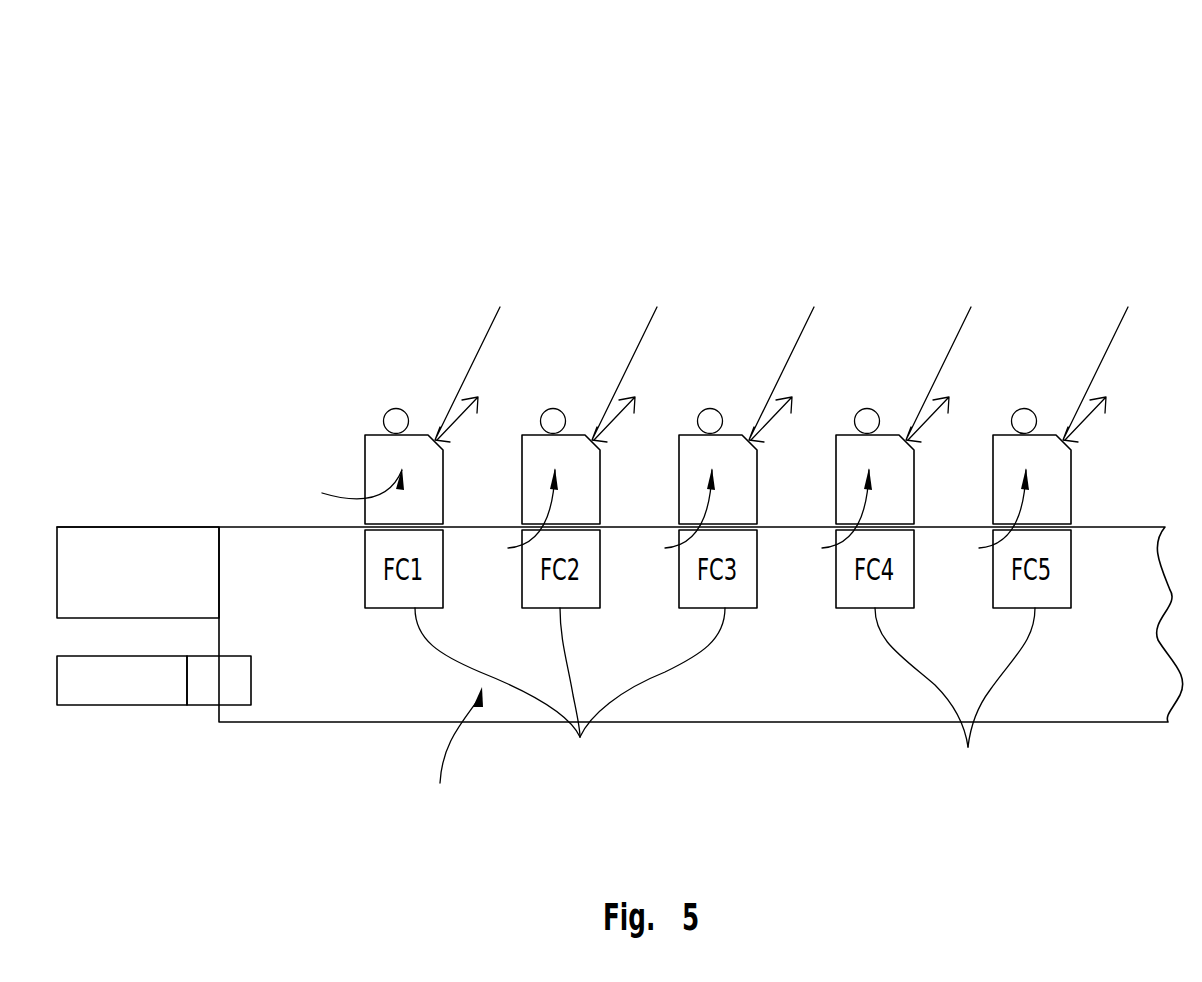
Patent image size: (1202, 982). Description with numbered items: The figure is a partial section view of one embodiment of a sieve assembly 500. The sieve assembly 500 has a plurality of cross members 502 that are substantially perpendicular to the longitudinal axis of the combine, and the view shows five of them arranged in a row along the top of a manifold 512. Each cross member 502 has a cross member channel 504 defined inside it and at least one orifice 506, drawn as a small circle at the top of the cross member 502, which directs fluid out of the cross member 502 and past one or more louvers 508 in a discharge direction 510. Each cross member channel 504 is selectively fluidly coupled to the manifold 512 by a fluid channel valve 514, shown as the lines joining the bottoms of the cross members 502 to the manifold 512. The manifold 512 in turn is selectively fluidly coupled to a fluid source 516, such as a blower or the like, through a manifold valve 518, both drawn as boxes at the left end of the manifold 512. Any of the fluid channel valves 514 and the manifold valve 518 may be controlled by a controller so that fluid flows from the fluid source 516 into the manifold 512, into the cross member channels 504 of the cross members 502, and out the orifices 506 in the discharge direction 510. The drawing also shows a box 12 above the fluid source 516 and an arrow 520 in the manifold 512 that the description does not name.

The sieve assembly 500 is at (300, 145).
The control unit 12 is at (137, 545).
The cross member 502 is at (368, 435).
The cross member channel 504 is at (650, 519).
The orifice 506 is at (403, 410).
The louver 508 is at (500, 307).
The discharge direction 510 is at (458, 418).
The manifold 512 is at (788, 723).
The fluid channel valve 514 is at (725, 699).
The fluid source 516 is at (110, 685).
The manifold valve 518 is at (204, 685).
The transport direction arrow 520 is at (449, 754).